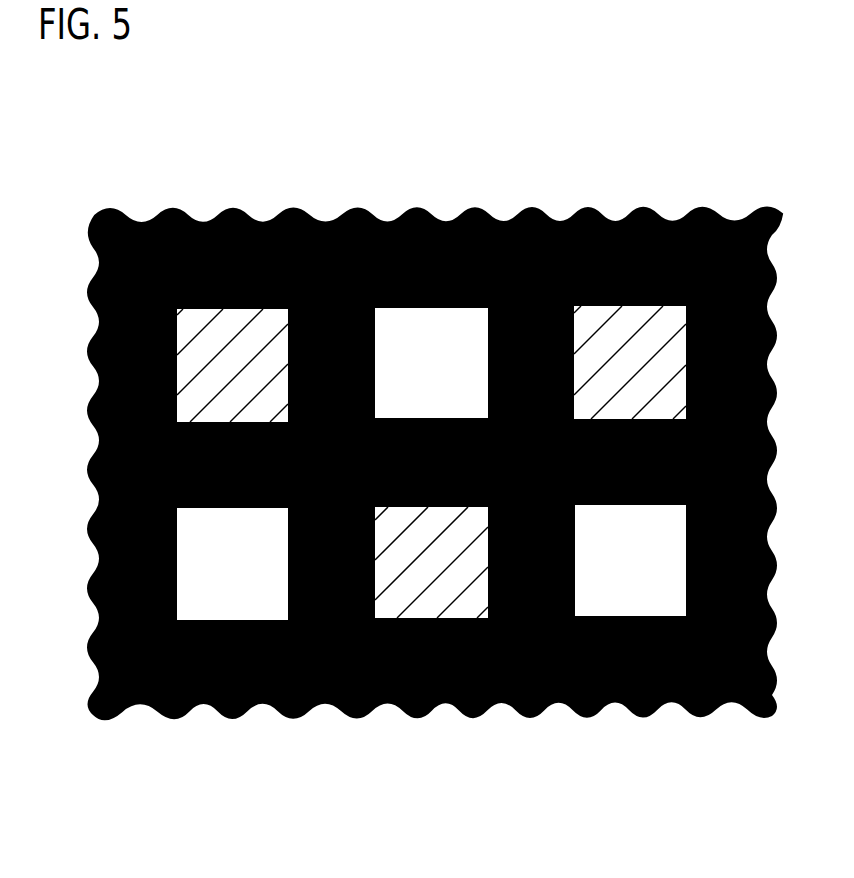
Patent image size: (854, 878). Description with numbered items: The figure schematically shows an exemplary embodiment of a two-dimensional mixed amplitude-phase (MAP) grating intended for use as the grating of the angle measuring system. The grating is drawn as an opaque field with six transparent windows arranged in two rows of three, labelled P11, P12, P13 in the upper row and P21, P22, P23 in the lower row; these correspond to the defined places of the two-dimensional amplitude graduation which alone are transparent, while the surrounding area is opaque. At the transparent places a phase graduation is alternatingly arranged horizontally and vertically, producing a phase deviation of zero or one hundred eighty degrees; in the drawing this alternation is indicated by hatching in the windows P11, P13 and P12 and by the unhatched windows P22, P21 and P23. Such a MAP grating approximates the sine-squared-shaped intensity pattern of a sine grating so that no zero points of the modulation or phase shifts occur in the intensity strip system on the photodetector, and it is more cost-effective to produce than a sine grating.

The pixel (row 1, column 1), selected P11 is at (232, 365).
The pixel (row 2, column 2), unselected P22 is at (431, 363).
The pixel (row 1, column 3), selected P13 is at (630, 362).
The pixel (row 2, column 1), unselected P21 is at (232, 564).
The pixel (row 1, column 2), selected P12 is at (431, 562).
The pixel (row 2, column 3), unselected P23 is at (630, 560).